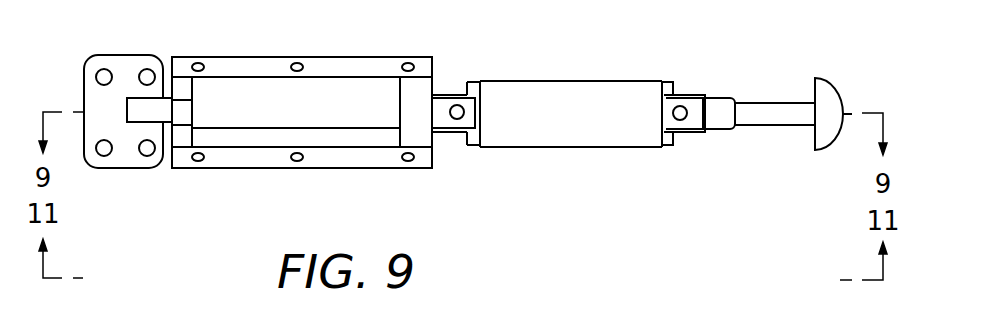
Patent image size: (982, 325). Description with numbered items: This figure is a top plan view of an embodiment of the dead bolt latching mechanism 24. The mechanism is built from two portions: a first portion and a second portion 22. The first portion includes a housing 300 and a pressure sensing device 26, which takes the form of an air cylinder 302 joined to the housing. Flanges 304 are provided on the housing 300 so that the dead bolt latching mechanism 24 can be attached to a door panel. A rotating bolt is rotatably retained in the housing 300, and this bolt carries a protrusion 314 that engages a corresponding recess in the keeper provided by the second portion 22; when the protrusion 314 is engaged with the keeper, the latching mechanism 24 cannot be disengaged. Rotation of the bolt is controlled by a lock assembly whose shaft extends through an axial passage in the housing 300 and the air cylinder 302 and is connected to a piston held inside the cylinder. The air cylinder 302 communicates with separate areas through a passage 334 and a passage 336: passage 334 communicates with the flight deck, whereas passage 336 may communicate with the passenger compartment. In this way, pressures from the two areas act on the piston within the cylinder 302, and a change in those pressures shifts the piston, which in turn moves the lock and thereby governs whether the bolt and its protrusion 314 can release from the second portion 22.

The second portion 22 is at (125, 177).
The dead bolt latching mechanism 24 is at (528, 197).
The pressure sensing device 26 is at (570, 112).
The housing 300 is at (293, 114).
The air cylinder 302 is at (572, 148).
The flanges 304 is at (245, 63).
The protrusion 314 is at (180, 112).
The passage 334 is at (457, 119).
The passage 336 is at (683, 120).